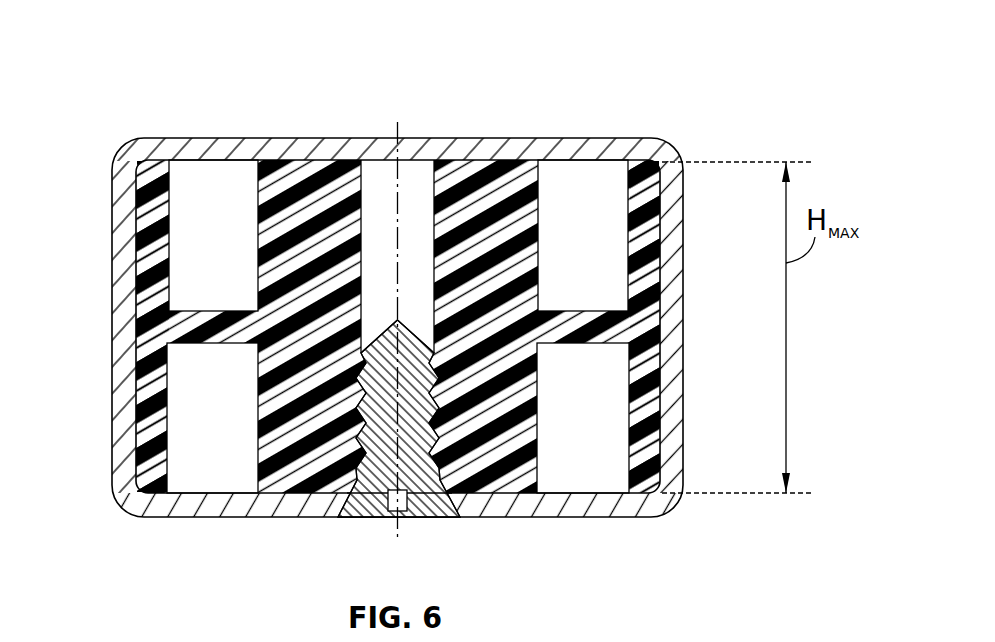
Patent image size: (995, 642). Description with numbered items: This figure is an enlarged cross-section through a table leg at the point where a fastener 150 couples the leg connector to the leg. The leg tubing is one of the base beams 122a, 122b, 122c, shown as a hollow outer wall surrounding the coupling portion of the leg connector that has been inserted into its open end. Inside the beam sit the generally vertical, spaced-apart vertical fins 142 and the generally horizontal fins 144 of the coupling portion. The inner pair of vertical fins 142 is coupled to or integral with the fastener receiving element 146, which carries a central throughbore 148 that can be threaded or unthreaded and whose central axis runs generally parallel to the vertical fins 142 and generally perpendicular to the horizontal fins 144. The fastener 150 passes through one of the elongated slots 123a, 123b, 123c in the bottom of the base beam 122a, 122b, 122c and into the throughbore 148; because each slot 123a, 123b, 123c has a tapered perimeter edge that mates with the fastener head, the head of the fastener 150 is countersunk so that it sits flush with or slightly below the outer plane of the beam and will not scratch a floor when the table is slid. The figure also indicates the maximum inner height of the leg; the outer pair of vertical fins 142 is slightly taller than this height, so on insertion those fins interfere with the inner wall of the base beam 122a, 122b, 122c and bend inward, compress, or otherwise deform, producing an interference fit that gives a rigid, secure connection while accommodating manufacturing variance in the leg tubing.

The base beam 122a is at (397, 262).
The base beam 122b is at (397, 262).
The base beam 122c is at (377, 138).
The elongated slot 123a is at (488, 459).
The elongated slot 123b is at (488, 459).
The elongated slot 123c is at (460, 515).
The vertical fins 142 is at (170, 197).
The horizontal fins 144 is at (184, 343).
The fastener receiving element 146 is at (302, 203).
The throughbore 148 is at (416, 175).
The fastener 150 is at (370, 498).